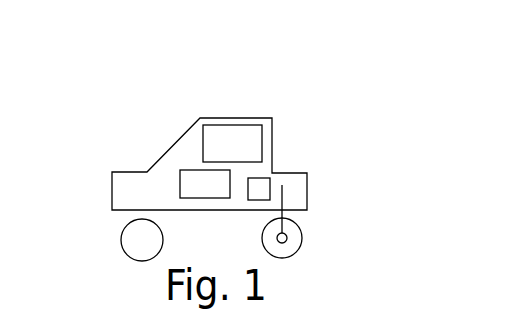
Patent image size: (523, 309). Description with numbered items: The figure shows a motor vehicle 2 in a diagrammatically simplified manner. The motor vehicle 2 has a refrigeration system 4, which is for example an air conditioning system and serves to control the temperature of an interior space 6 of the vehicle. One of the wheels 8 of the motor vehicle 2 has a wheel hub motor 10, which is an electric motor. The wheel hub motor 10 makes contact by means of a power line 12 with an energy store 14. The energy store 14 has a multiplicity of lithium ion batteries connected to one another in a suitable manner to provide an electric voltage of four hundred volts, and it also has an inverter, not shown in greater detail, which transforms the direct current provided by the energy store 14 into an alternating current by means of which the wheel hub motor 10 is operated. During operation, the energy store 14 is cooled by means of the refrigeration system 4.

The motor vehicle 2 is at (274, 80).
The refrigeration system 4 is at (190, 162).
The interior space 6 is at (215, 130).
The wheel 8 is at (298, 226).
The wheel hub motor 10 is at (287, 239).
The power line 12 is at (270, 192).
The energy store 14 is at (266, 178).